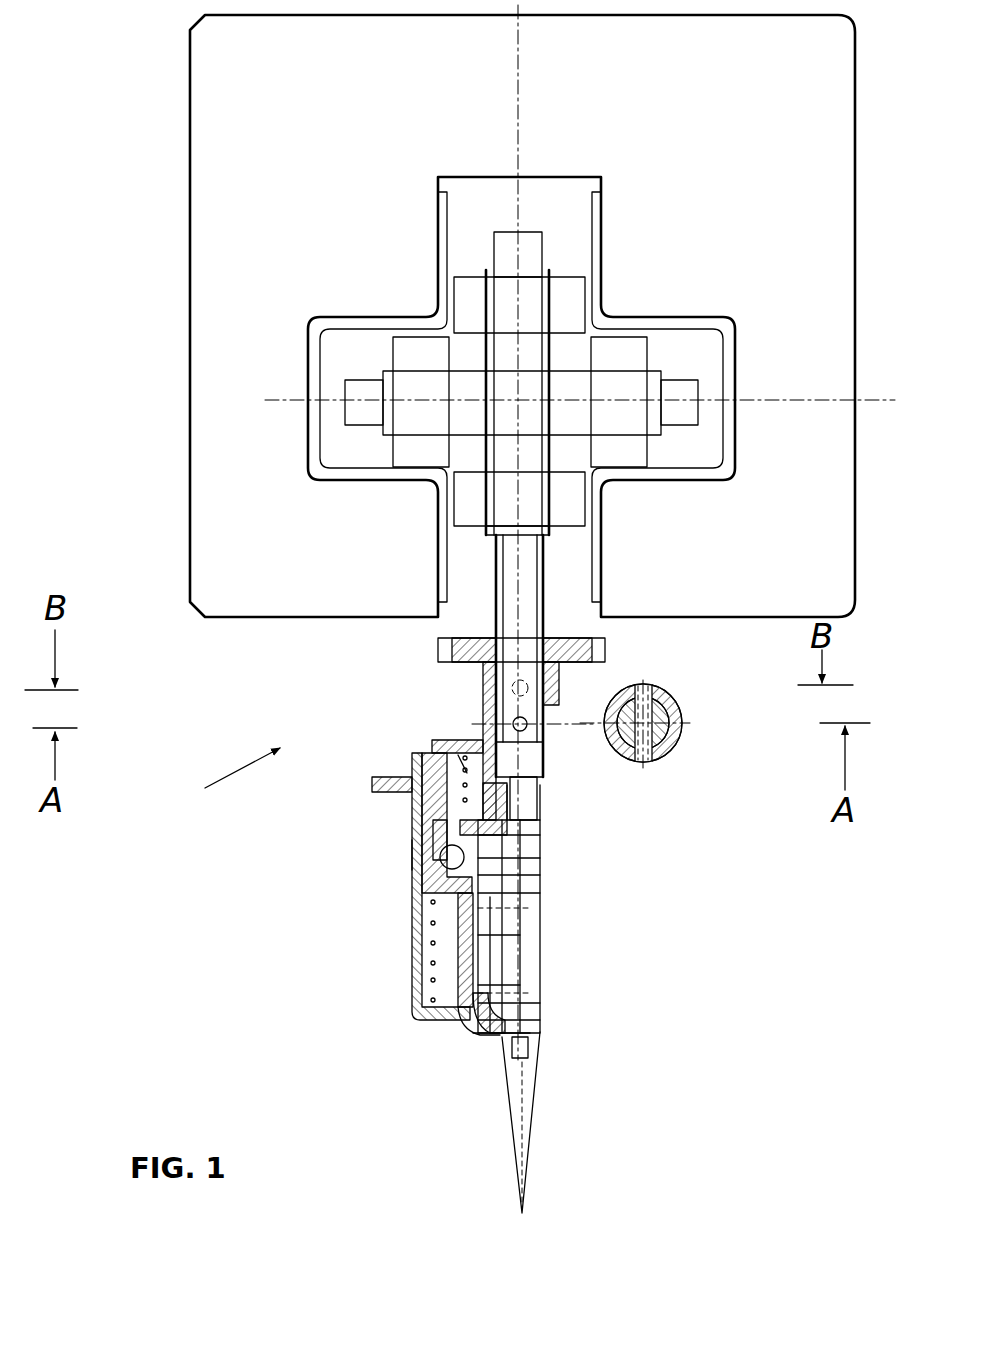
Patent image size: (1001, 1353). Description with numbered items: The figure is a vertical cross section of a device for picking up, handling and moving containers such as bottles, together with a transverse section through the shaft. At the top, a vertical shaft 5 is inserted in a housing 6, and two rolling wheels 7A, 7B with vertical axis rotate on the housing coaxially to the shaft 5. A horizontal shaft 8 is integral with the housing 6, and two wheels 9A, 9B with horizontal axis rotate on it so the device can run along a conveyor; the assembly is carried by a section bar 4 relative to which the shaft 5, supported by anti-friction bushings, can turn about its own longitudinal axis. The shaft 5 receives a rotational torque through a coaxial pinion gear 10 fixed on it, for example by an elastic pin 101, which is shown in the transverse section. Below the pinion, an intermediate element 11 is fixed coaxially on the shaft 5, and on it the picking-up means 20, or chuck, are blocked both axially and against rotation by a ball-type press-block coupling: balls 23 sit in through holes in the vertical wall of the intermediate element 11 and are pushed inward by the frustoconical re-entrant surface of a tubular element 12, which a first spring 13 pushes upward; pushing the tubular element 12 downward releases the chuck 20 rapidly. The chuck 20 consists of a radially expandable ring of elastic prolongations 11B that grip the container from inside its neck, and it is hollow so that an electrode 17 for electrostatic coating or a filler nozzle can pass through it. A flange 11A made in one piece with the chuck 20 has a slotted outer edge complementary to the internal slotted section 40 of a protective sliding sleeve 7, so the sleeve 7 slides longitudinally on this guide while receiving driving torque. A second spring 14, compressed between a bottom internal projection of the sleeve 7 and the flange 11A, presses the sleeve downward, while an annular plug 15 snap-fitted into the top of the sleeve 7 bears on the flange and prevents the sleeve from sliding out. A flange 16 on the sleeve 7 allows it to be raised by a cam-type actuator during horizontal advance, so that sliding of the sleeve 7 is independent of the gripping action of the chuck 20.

In FIG. 1, the section bar 4 is at (187, 330).
In FIG. 1, the vertical shaft 5 is at (478, 636).
In FIG. 1B, the vertical shaft 5 is at (677, 745).
In FIG. 1, the housing 6 is at (548, 278).
In FIG. 1, the protective sliding sleeve 7 is at (410, 853).
In FIG. 1, the rolling wheel 7A is at (468, 532).
In FIG. 1, the rolling wheel 7B is at (470, 278).
In FIG. 1, the horizontal shaft 8 is at (698, 390).
In FIG. 1, the wheel 9A is at (407, 337).
In FIG. 1, the wheel 9B is at (630, 336).
In FIG. 1, the pinion gear 10 is at (605, 650).
In FIG. 1B, the pinion gear 10 is at (680, 703).
In FIG. 1, the intermediate element 11 is at (537, 800).
In FIG. 1, the flange 11A is at (410, 905).
In FIG. 1, the elastic prolongations 11B is at (480, 1030).
In FIG. 1, the tubular element 12 is at (440, 742).
In FIG. 1, the first spring 13 is at (430, 752).
In FIG. 1, the second spring 14 is at (410, 968).
In FIG. 1, the annular plug 15 is at (372, 786).
In FIG. 1, the flange 16 is at (436, 800).
In FIG. 1, the electrode 17 is at (542, 1070).
In FIG. 1, the picking-up means 20 is at (410, 935).
In FIG. 1, the balls 23 is at (410, 865).
In FIG. 1, the internal slotted section 40 is at (462, 1028).
In FIG. 1B, the elastic pin 101 is at (643, 762).